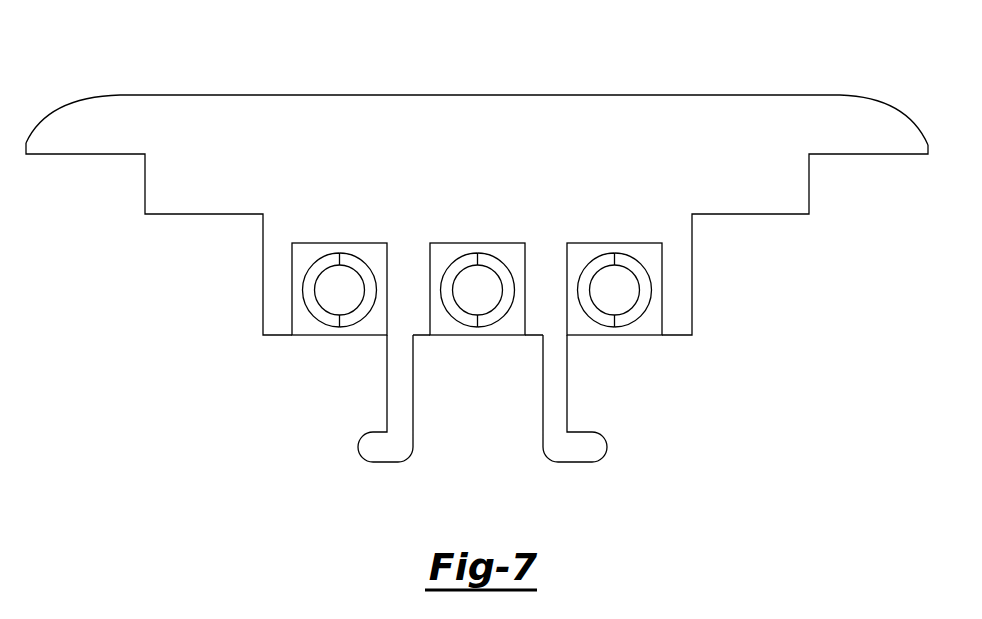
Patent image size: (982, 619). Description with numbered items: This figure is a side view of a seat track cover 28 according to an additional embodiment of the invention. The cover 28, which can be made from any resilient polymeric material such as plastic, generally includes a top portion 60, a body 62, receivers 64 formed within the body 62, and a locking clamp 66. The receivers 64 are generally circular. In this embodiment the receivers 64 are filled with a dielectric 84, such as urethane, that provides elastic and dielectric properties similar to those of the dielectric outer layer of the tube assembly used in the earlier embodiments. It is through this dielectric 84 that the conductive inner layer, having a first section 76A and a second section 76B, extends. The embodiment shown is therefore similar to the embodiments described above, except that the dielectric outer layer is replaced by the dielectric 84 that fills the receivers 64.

The cover 28 is at (100, 97).
The top portion 60 is at (203, 95).
The body 62 is at (742, 118).
The receivers 64 is at (292, 262).
The first section 76A is at (313, 277).
The second section 76B is at (367, 277).
The dielectric 84 is at (380, 330).
The locking clamp 66 is at (356, 452).